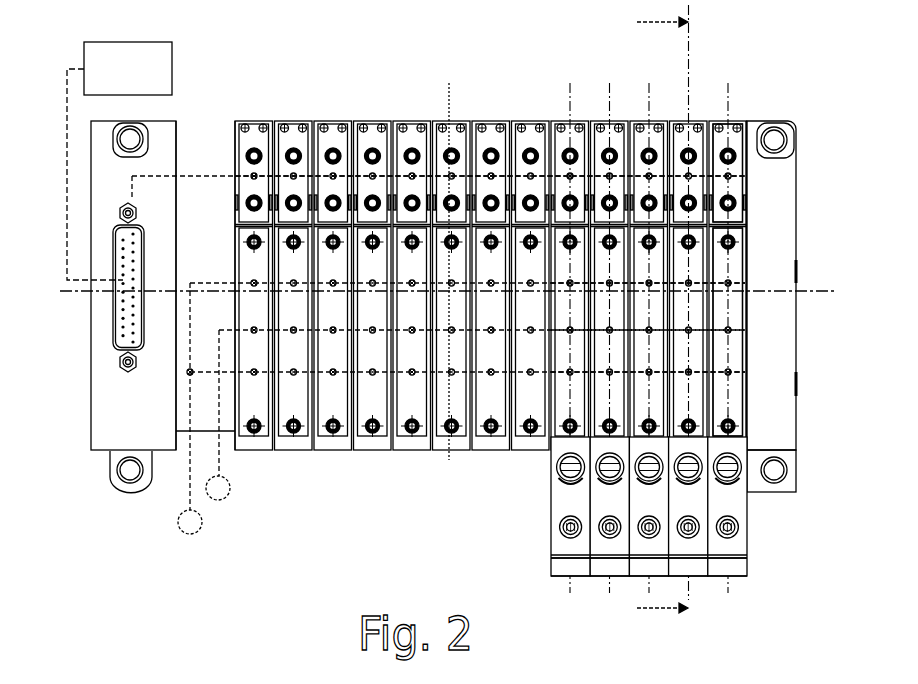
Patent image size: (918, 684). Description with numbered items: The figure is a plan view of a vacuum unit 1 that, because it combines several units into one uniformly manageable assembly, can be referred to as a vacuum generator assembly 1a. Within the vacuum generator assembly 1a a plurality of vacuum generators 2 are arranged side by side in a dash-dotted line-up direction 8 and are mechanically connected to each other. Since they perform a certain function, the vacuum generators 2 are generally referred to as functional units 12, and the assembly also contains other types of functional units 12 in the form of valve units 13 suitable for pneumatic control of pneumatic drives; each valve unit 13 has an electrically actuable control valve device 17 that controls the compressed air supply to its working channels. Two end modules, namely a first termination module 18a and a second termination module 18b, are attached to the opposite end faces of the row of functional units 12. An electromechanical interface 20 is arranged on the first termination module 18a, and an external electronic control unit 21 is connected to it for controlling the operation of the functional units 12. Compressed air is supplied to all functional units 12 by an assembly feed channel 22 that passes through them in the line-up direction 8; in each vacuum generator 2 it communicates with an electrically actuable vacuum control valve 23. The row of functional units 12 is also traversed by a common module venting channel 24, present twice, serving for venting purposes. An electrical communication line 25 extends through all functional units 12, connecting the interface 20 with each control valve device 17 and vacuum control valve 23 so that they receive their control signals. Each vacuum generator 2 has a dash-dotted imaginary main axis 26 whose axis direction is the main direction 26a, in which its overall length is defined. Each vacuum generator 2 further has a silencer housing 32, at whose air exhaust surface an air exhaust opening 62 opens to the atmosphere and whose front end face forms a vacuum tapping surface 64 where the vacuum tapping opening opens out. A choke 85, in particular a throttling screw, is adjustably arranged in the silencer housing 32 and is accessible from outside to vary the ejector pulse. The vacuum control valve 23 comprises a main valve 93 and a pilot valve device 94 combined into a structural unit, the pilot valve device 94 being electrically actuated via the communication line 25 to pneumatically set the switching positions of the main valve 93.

The vacuum unit 1 is at (439, 311).
The vacuum generator assembly 1a is at (224, 75).
The vacuum generator 2 is at (725, 112).
The line-up direction 8 is at (803, 291).
The functional unit 12 is at (392, 253).
The valve unit 13 is at (368, 112).
The control valve device 17 is at (290, 257).
The first termination module 18a is at (100, 400).
The second termination module 18b is at (778, 432).
The electromechanical interface 20 is at (118, 316).
The electronic control unit 21 is at (139, 80).
The assembly feed channel 22 is at (675, 330).
The vacuum control valve 23 is at (741, 169).
The module venting channel 24 is at (680, 283).
The communication line 25 is at (477, 175).
The main axis 26 is at (641, 323).
The main direction 26a is at (609, 100).
The silencer housing 32 is at (700, 500).
The air exhaust opening 62 is at (560, 520).
The vacuum tapping surface 64 is at (562, 580).
The choke 85 is at (556, 470).
The main valve 93 is at (737, 313).
The pilot valve device 94 is at (735, 190).